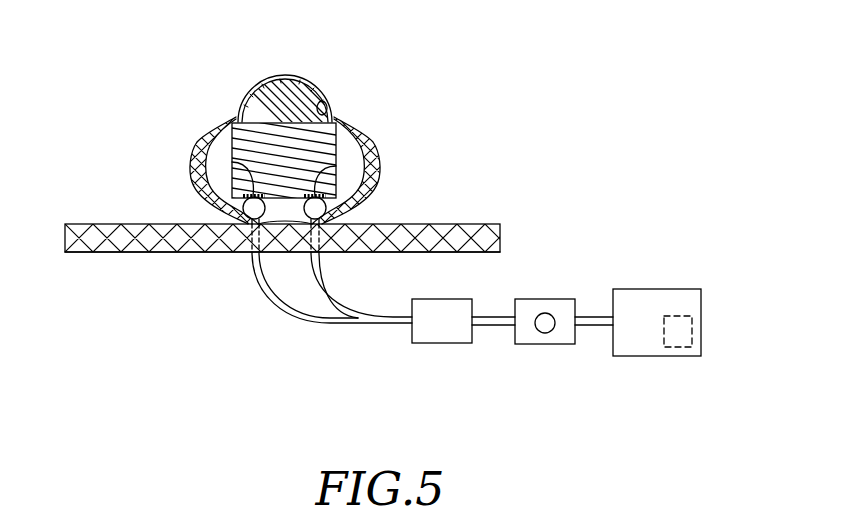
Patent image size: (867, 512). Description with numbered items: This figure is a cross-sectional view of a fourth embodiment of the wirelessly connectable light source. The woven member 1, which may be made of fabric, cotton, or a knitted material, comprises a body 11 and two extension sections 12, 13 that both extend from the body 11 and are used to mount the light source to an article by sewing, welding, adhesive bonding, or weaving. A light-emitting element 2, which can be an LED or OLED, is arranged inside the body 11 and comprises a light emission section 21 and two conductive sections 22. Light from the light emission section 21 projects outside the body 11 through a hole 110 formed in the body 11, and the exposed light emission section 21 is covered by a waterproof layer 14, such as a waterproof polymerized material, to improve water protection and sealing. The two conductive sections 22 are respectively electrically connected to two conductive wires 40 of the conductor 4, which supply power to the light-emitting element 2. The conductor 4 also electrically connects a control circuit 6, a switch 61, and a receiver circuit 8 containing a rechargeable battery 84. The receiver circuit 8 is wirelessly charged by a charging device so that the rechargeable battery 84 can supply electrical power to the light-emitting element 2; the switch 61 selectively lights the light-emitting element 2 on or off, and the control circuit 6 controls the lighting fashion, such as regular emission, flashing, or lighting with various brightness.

The woven member 1 is at (195, 126).
The light-emitting element 2 is at (242, 81).
The conductor 4 is at (122, 182).
The control circuit 6 is at (440, 330).
The receiver circuit 8 is at (633, 300).
The body 11 is at (367, 147).
The extension section 12 is at (484, 229).
The extension section 13 is at (80, 254).
The waterproof layer 14 is at (306, 80).
The light emission section 21 is at (281, 78).
The conductive section 22 is at (232, 162).
The conductive wire 40 is at (246, 208).
The switch 61 is at (541, 316).
The rechargeable battery 84 is at (697, 330).
The hole 110 is at (321, 103).